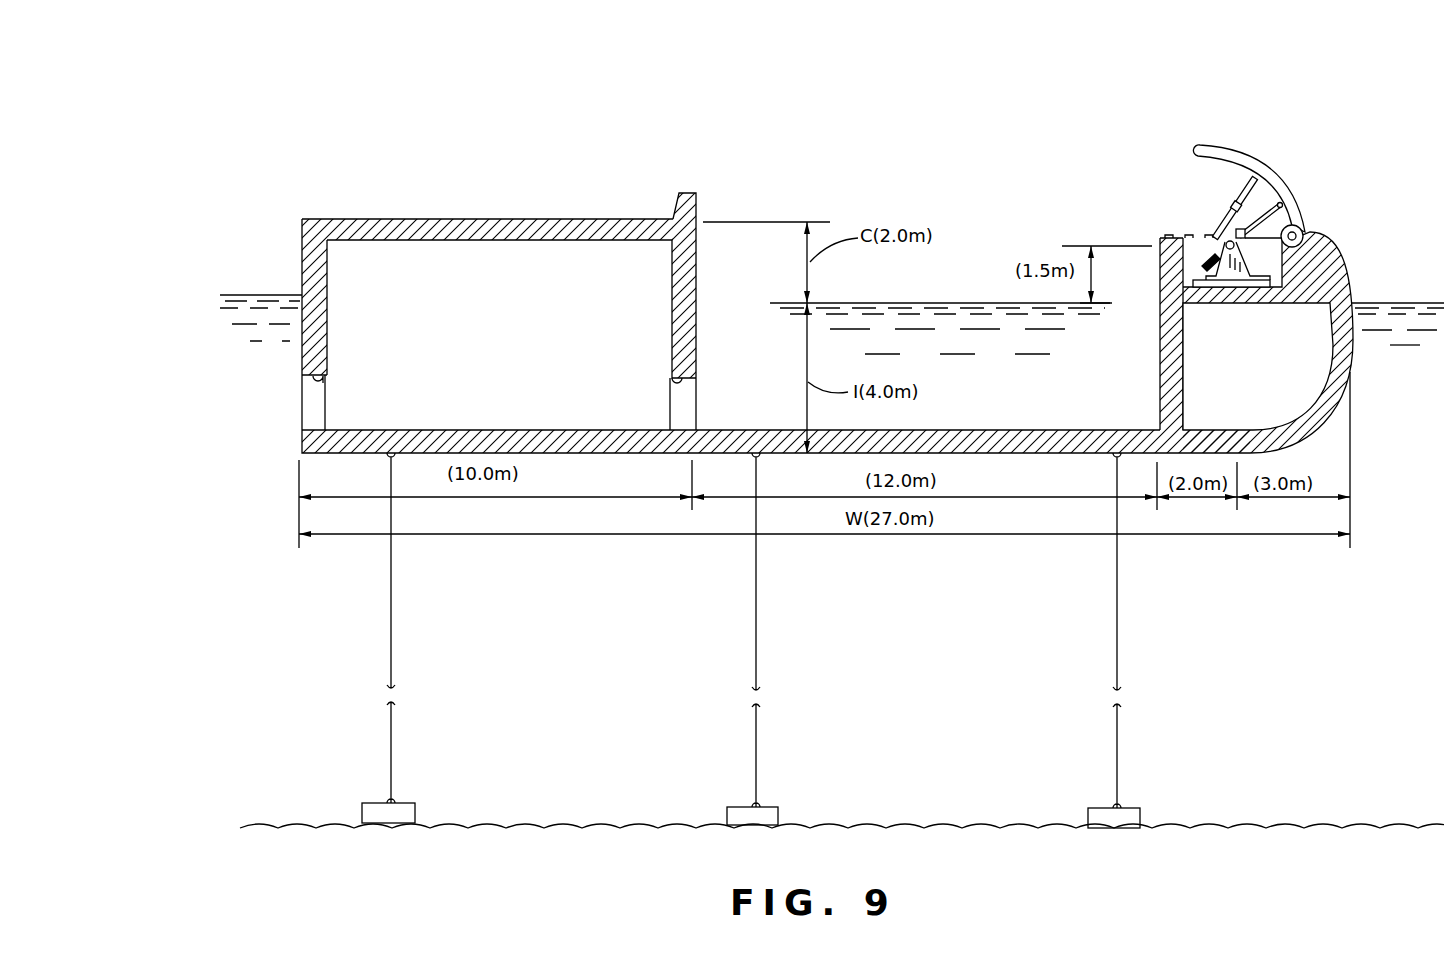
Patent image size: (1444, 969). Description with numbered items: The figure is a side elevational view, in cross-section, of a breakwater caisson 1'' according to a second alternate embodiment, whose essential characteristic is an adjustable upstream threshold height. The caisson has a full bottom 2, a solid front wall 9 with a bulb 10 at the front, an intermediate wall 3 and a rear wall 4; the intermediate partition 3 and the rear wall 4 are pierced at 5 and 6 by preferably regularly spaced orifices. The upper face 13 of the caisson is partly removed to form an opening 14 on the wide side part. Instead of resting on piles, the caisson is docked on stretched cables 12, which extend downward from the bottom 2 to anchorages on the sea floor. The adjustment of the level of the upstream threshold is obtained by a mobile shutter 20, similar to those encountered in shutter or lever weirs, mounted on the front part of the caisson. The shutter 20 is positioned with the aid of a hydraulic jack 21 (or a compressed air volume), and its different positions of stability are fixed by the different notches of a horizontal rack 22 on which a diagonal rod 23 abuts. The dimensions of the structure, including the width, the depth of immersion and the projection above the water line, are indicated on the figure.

The caisson 1'' is at (834, 429).
The bottom 2 is at (1040, 453).
The intermediate wall 3 is at (697, 300).
The rear wall 4 is at (302, 288).
The orifices 5 is at (324, 387).
The orifices 6 is at (672, 388).
The front wall 9 is at (1160, 380).
The bulb 10 is at (1353, 340).
The cables 12 is at (392, 575).
The upper face 13 is at (522, 222).
The opening 14 is at (699, 250).
The mobile shutter 20 is at (1232, 147).
The hydraulic jack 21 is at (1260, 212).
The horizontal rack 22 is at (1182, 237).
The diagonal rod 23 is at (1227, 205).